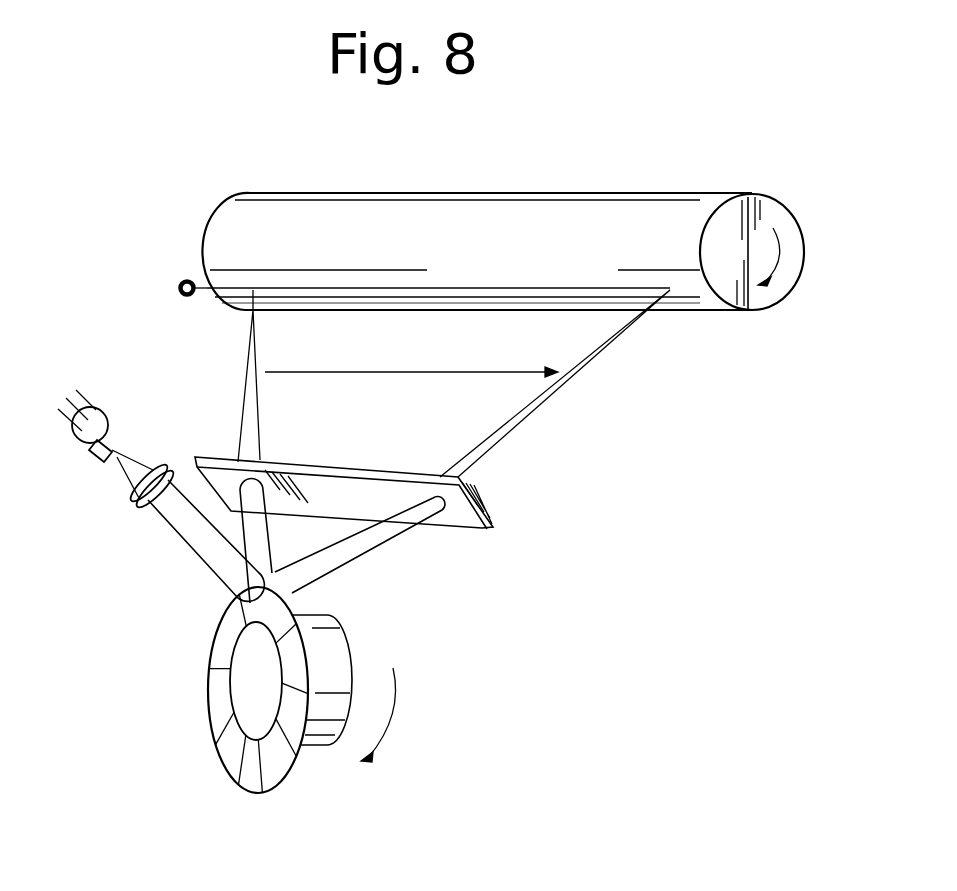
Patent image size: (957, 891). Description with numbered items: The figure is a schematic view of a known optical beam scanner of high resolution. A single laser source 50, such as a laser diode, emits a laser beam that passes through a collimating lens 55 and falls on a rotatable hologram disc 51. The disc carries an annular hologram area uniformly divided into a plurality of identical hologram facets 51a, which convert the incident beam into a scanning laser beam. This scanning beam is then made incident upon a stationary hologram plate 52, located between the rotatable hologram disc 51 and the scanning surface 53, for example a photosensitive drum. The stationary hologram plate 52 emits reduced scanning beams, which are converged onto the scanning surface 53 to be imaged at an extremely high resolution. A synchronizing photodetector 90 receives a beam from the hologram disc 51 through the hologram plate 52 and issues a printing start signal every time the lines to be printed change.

The laser source 50 is at (107, 407).
The rotatable hologram disc 51 is at (208, 716).
The hologram facets 51a is at (280, 613).
The stationary hologram plate 52 is at (457, 520).
The scanning surface 53 is at (700, 303).
The collimating lens 55 is at (133, 503).
The synchronizing photodetector 90 is at (183, 280).